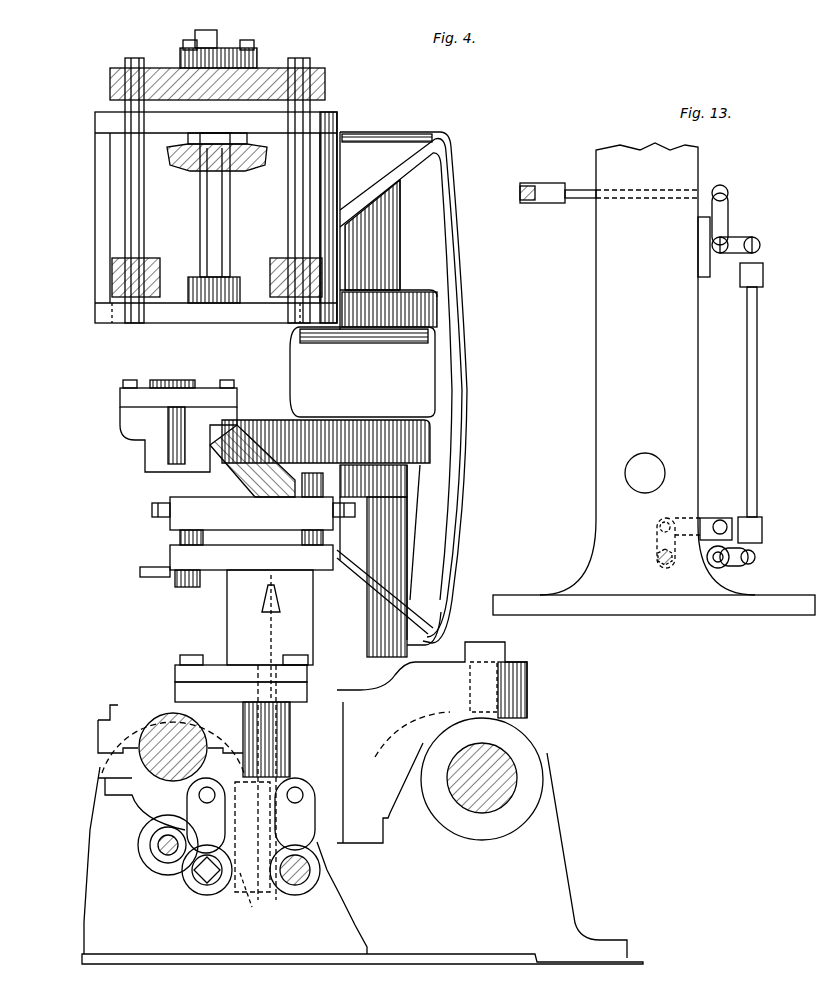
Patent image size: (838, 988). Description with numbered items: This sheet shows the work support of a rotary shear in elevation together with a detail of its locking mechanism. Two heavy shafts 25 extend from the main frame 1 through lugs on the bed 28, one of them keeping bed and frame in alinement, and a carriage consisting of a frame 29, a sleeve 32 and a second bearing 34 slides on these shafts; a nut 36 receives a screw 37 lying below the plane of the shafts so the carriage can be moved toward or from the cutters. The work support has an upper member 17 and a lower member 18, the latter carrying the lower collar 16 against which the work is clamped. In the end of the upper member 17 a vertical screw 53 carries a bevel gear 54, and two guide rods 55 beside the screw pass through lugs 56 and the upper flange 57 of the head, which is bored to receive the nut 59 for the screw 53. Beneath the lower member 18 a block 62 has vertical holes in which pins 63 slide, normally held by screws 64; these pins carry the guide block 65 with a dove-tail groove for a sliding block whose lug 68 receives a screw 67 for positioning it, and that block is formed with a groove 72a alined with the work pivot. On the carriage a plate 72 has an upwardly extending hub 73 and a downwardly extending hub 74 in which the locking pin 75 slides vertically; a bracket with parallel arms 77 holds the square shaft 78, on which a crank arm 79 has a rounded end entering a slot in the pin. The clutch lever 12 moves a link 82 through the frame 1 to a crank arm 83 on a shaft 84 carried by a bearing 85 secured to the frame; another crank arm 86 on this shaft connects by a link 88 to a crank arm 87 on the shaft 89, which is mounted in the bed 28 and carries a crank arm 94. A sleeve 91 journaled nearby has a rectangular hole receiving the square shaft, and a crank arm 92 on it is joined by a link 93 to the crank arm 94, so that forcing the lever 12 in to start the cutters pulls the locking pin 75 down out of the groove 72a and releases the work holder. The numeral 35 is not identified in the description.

In FIG. 13, the main frame 1 is at (654, 379).
In FIG. 13, the clutch lever 12 is at (520, 193).
In FIG. 4, the lower collar 16 is at (196, 385).
In FIG. 4, the upper member of the work support 17 is at (402, 252).
In FIG. 4, the lower member of the work support 18 is at (400, 514).
In FIG. 4, the heavy shafts 25 is at (156, 760).
In FIG. 13, the heavy shafts 25 is at (645, 473).
In FIG. 4, the bed 28 is at (362, 833).
In FIG. 4, the frame of the carriage 29 is at (241, 692).
In FIG. 4, the sleeve 32 is at (520, 763).
In FIG. 4, the second bearing 34 is at (140, 712).
In FIG. 4, the pin 35 is at (155, 858).
In FIG. 4, the nut 36 is at (158, 840).
In FIG. 4, the screw 37 is at (160, 846).
In FIG. 4, the screw 53 is at (231, 229).
In FIG. 4, the bevel gear 54 is at (220, 164).
In FIG. 4, the guide rods 55 is at (144, 213).
In FIG. 4, the lugs 56 is at (160, 262).
In FIG. 4, the upper flange 57 is at (326, 89).
In FIG. 4, the nut 59 is at (256, 58).
In FIG. 4, the block 62 is at (251, 513).
In FIG. 4, the pins 63 is at (190, 531).
In FIG. 4, the screws 64 is at (152, 514).
In FIG. 4, the guide block 65 is at (251, 557).
In FIG. 4, the screw 67 is at (152, 578).
In FIG. 4, the lug 68 is at (186, 588).
In FIG. 4, the plate 72 is at (241, 669).
In FIG. 4, the groove 72a is at (263, 596).
In FIG. 4, the upwardly extending hub 73 is at (270, 617).
In FIG. 4, the downwardly extending hub 74 is at (284, 743).
In FIG. 4, the locking pin 75 is at (277, 603).
In FIG. 13, the parallel arms 77 is at (658, 566).
In FIG. 4, the square shaft 78 is at (213, 880).
In FIG. 4, the crank arm 79 is at (254, 901).
In FIG. 13, the link 82 is at (580, 201).
In FIG. 13, the crank arm 83 is at (730, 211).
In FIG. 13, the shaft 84 is at (722, 262).
In FIG. 13, the bearing 85 is at (712, 244).
In FIG. 13, the crank arm 86 is at (752, 237).
In FIG. 13, the crank arm 87 is at (745, 566).
In FIG. 13, the link 88 is at (757, 449).
In FIG. 4, the shaft 89 is at (293, 888).
In FIG. 13, the shaft 89 is at (712, 566).
In FIG. 4, the sleeve 91 is at (200, 878).
In FIG. 4, the crank arm 92 is at (206, 815).
In FIG. 13, the crank arm 92 is at (657, 547).
In FIG. 4, the link 93 is at (252, 837).
In FIG. 13, the link 93 is at (718, 519).
In FIG. 4, the crank arm 94 is at (310, 829).
In FIG. 13, the crank arm 94 is at (724, 524).